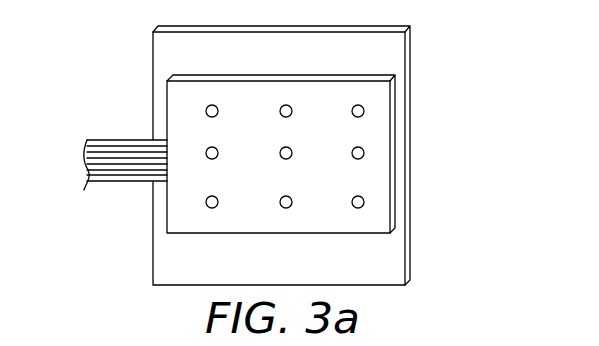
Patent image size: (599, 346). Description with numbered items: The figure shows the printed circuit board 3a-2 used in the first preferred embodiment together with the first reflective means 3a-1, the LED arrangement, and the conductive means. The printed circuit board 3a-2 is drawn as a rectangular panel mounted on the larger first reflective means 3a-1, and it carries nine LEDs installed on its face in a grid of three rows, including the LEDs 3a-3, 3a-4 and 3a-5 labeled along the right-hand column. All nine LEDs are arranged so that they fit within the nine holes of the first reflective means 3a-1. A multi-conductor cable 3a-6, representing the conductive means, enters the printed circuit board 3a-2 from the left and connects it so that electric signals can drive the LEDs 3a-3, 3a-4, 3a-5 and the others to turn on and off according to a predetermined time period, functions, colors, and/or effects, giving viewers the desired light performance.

The first reflective means 3a-1 is at (406, 49).
The printed circuit board 3a-2 is at (188, 97).
The LED 3a-3 is at (365, 108).
The LED 3a-4 is at (365, 151).
The LED 3a-5 is at (365, 202).
The ribbon cable 3a-6 is at (130, 178).